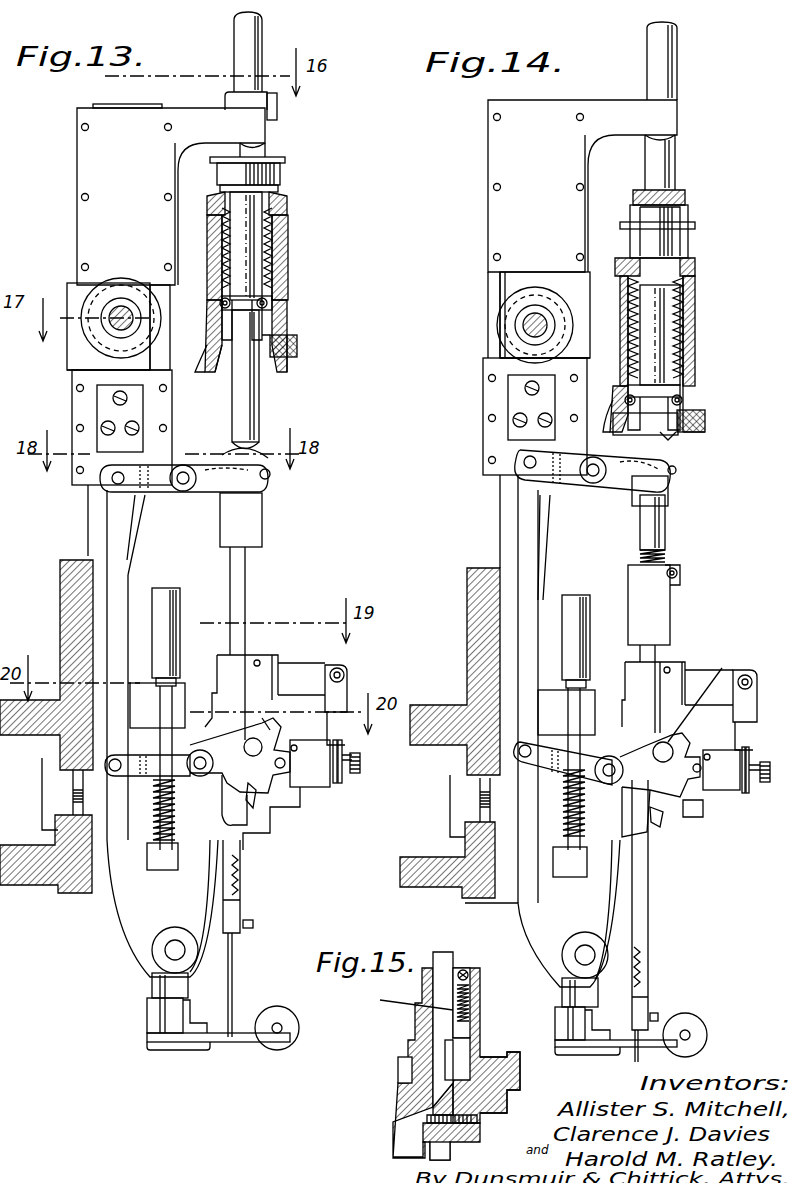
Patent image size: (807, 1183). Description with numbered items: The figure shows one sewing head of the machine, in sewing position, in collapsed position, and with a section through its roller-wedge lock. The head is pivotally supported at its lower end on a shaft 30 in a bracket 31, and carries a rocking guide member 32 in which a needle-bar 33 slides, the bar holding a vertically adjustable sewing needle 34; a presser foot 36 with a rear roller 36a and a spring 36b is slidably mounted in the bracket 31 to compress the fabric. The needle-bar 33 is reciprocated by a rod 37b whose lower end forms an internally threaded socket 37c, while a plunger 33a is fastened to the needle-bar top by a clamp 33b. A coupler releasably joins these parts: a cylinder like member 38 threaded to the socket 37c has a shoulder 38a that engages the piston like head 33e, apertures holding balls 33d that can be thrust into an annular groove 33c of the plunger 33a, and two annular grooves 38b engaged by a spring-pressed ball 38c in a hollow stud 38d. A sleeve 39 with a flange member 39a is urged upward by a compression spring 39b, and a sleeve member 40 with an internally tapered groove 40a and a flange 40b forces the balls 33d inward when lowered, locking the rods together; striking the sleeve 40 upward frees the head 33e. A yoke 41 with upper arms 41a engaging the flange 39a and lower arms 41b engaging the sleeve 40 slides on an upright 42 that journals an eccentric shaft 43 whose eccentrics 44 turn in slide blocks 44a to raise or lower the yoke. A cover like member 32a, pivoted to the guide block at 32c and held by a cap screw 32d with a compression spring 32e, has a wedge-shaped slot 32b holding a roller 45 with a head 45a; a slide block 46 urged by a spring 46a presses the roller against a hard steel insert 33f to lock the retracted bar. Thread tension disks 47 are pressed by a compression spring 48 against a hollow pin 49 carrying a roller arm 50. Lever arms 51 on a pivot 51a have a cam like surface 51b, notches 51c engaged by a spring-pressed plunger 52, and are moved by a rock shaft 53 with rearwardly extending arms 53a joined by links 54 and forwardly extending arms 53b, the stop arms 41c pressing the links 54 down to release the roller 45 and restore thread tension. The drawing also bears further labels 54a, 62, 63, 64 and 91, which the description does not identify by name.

In FIG. 13, the shaft 30 is at (166, 952).
In FIG. 14, the shaft 30 is at (580, 948).
In FIG. 13, the bracket 31 is at (125, 912).
In FIG. 14, the bracket 31 is at (535, 905).
In FIG. 13, the rocking guide member 32 is at (242, 856).
In FIG. 14, the rocking guide member 32 is at (650, 905).
In FIG. 15, the rocking guide member 32 is at (405, 1094).
In FIG. 13, the cover like member 32a is at (286, 665).
In FIG. 14, the cover like member 32a is at (684, 670).
In FIG. 15, the cover like member 32a is at (512, 1076).
In FIG. 14, the wedge-shaped slot 32b is at (655, 762).
In FIG. 15, the wedge-shaped slot 32b is at (463, 1068).
In FIG. 13, the pivotal connection 32c is at (259, 662).
In FIG. 14, the pivotal connection 32c is at (669, 668).
In FIG. 15, the pivotal connection 32c is at (465, 970).
In FIG. 15, the cap screw 32d is at (486, 1120).
In FIG. 15, the compression spring 32e is at (470, 1147).
In FIG. 13, the needle-bar 33 is at (246, 586).
In FIG. 14, the needle-bar 33 is at (651, 881).
In FIG. 15, the needle-bar 33 is at (443, 953).
In FIG. 13, the plunger 33a is at (255, 402).
In FIG. 14, the plunger 33a is at (667, 531).
In FIG. 13, the clamp 33b is at (255, 519).
In FIG. 14, the clamp 33b is at (660, 600).
In FIG. 13, the annular groove 33c is at (280, 286).
In FIG. 14, the annular groove 33c is at (682, 392).
In FIG. 13, the balls 33d is at (268, 303).
In FIG. 14, the balls 33d is at (684, 402).
In FIG. 13, the piston like head 33e is at (256, 230).
In FIG. 14, the piston like head 33e is at (665, 326).
In FIG. 15, the hard steel insert 33f is at (447, 1057).
In FIG. 13, the sewing needle 34 is at (235, 962).
In FIG. 14, the sewing needle 34 is at (634, 1052).
In FIG. 13, the presser foot 36 is at (150, 1016).
In FIG. 14, the presser foot 36 is at (575, 1020).
In FIG. 13, the roller 36a is at (282, 1042).
In FIG. 14, the roller 36a is at (690, 1016).
In FIG. 13, the spring 36b is at (172, 822).
In FIG. 14, the spring 36b is at (565, 822).
In FIG. 13, the rod 37b is at (257, 28).
In FIG. 14, the rod 37b is at (672, 80).
In FIG. 13, the internally threaded socket 37c is at (273, 105).
In FIG. 14, the internally threaded socket 37c is at (687, 205).
In FIG. 13, the cylinder like member 38 is at (287, 240).
In FIG. 14, the cylinder like member 38 is at (694, 296).
In FIG. 13, the shoulder 38a is at (210, 282).
In FIG. 14, the shoulder 38a is at (686, 384).
In FIG. 13, the annular grooves 38b is at (290, 320).
In FIG. 14, the annular grooves 38b is at (680, 440).
In FIG. 13, the spring-pressed ball 38c is at (284, 357).
In FIG. 14, the spring-pressed ball 38c is at (706, 419).
In FIG. 13, the hollow stud 38d is at (297, 345).
In FIG. 14, the hollow stud 38d is at (692, 434).
In FIG. 13, the sleeve 39 is at (275, 178).
In FIG. 14, the sleeve 39 is at (690, 243).
In FIG. 13, the flange member 39a is at (272, 160).
In FIG. 14, the flange member 39a is at (694, 226).
In FIG. 13, the compression spring 39b is at (207, 228).
In FIG. 14, the compression spring 39b is at (692, 284).
In FIG. 13, the sleeve member 40 is at (205, 302).
In FIG. 14, the sleeve member 40 is at (616, 390).
In FIG. 13, the internally tapered groove 40a is at (207, 330).
In FIG. 14, the internally tapered groove 40a is at (614, 410).
In FIG. 13, the flange 40b is at (285, 206).
In FIG. 14, the flange 40b is at (616, 265).
In FIG. 13, the yoke 41 is at (88, 163).
In FIG. 14, the yoke 41 is at (525, 140).
In FIG. 13, the upper arms 41a is at (245, 132).
In FIG. 14, the upper arms 41a is at (665, 117).
In FIG. 13, the lower arms 41b is at (258, 468).
In FIG. 14, the lower arms 41b is at (668, 470).
In FIG. 13, the stop arms 41c is at (145, 447).
In FIG. 14, the stop arms 41c is at (510, 432).
In FIG. 13, the upright 42 is at (150, 99).
In FIG. 14, the upright 42 is at (503, 300).
In FIG. 13, the eccentric shaft 43 is at (110, 314).
In FIG. 14, the eccentric shaft 43 is at (530, 326).
In FIG. 13, the eccentrics 44 is at (95, 340).
In FIG. 14, the eccentrics 44 is at (528, 296).
In FIG. 13, the slide blocks 44a is at (72, 360).
In FIG. 14, the slide blocks 44a is at (505, 350).
In FIG. 15, the roller 45 is at (468, 1048).
In FIG. 14, the head 45a is at (672, 740).
In FIG. 15, the slide block 46 is at (470, 1002).
In FIG. 15, the spring 46a is at (470, 977).
In FIG. 13, the disks 47 is at (336, 790).
In FIG. 14, the disks 47 is at (744, 795).
In FIG. 13, the compression spring 48 is at (344, 784).
In FIG. 14, the compression spring 48 is at (750, 795).
In FIG. 13, the hollow pin 49 is at (361, 770).
In FIG. 14, the hollow pin 49 is at (766, 783).
In FIG. 13, the roller arm 50 is at (310, 763).
In FIG. 14, the roller arm 50 is at (700, 791).
In FIG. 13, the lever arms 51 is at (225, 760).
In FIG. 14, the lever arms 51 is at (575, 762).
In FIG. 13, the pivot 51a is at (195, 758).
In FIG. 14, the pivot 51a is at (604, 760).
In FIG. 13, the cam like surface 51b is at (276, 745).
In FIG. 14, the cam like surface 51b is at (685, 750).
In FIG. 13, the notches 51c is at (266, 776).
In FIG. 14, the notches 51c is at (672, 790).
In FIG. 13, the spring-pressed plunger 52 is at (256, 822).
In FIG. 14, the spring-pressed plunger 52 is at (662, 828).
In FIG. 13, the rock shaft 53 is at (183, 491).
In FIG. 14, the rock shaft 53 is at (594, 484).
In FIG. 13, the rearwardly extending arms 53a is at (125, 490).
In FIG. 14, the rearwardly extending arms 53a is at (545, 472).
In FIG. 13, the forwardly extending arms 53b is at (270, 492).
In FIG. 14, the forwardly extending arms 53b is at (668, 490).
In FIG. 13, the links 54 is at (118, 596).
In FIG. 14, the links 54 is at (527, 549).
In FIG. 13, the frame 54a is at (62, 581).
In FIG. 14, the frame 54a is at (470, 636).
In FIG. 13, the spring 62 is at (280, 262).
In FIG. 14, the spring 62 is at (692, 336).
In FIG. 13, the spring 63 is at (264, 718).
In FIG. 14, the spring 63 is at (706, 697).
In FIG. 15, the spring 63 is at (402, 996).
In FIG. 13, the spring 64 is at (361, 762).
In FIG. 14, the spring 64 is at (742, 750).
In FIG. 13, the pivot pin 91 is at (341, 688).